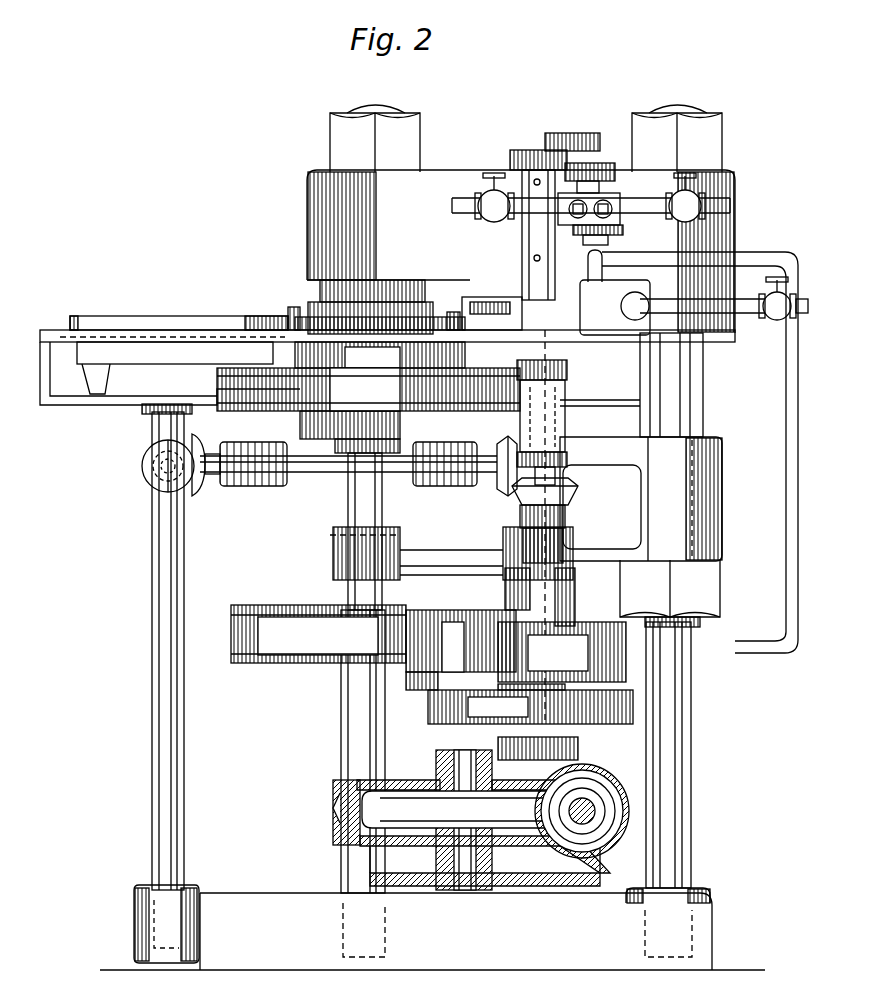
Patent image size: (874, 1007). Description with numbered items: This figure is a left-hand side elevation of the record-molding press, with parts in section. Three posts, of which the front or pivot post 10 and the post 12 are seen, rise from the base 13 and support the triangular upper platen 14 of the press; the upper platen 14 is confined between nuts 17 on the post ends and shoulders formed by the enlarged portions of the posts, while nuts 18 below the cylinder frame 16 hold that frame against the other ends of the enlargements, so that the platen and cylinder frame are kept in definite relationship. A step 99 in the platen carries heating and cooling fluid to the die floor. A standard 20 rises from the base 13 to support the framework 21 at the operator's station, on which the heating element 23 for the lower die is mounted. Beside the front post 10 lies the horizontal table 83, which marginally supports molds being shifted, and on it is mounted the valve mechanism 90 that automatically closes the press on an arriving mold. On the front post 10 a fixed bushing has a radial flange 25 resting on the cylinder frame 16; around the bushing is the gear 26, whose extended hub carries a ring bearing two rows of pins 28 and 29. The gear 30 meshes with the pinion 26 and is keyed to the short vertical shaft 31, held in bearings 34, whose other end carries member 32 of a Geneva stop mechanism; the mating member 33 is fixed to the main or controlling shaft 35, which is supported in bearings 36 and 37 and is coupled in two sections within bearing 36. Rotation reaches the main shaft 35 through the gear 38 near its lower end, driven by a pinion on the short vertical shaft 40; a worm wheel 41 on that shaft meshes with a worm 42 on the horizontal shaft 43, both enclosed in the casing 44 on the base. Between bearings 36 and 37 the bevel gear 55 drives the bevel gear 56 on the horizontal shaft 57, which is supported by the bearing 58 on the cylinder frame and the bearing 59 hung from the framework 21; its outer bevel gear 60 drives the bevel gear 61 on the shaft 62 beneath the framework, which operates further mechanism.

The nuts 17 is at (328, 131).
The upper platen 14 is at (455, 170).
The step 99 is at (520, 226).
The row of pins 29 is at (290, 309).
The row of pins 28 is at (452, 312).
The valve mechanism 90 is at (694, 306).
The table 83 is at (50, 330).
The heating element 23 is at (172, 365).
The gear 26 is at (298, 373).
The gear 30 is at (488, 367).
The framework 21 is at (122, 406).
The radial flange 25 is at (300, 430).
The bevel gear 61 is at (145, 460).
The shaft 62 is at (160, 471).
The bevel gear 60 is at (210, 497).
The bearing 59 is at (262, 495).
The horizontal shaft 57 is at (304, 479).
The bearing 58 is at (438, 486).
The bevel gear 56 is at (505, 495).
The bearing 36 is at (566, 449).
The bevel gear 55 is at (578, 494).
The cylinder frame 16 is at (641, 447).
The short vertical shaft 31 is at (382, 513).
The bearings 34 is at (326, 548).
The bearing 37 is at (568, 546).
The main or controlling shaft 35 is at (612, 588).
The nuts 18 is at (720, 586).
The member of Geneva stop mechanism 32 is at (290, 605).
The member of Geneva stop mechanism 33 is at (440, 616).
The gear 38 is at (428, 713).
The post 10 is at (341, 733).
The post 12 is at (690, 719).
The standard 20 is at (151, 781).
The worm 42 is at (605, 796).
The casing 44 is at (333, 815).
The worm wheel 41 is at (483, 833).
The horizontal shaft 43 is at (588, 828).
The short vertical shaft 40 is at (461, 873).
The base 13 is at (456, 931).